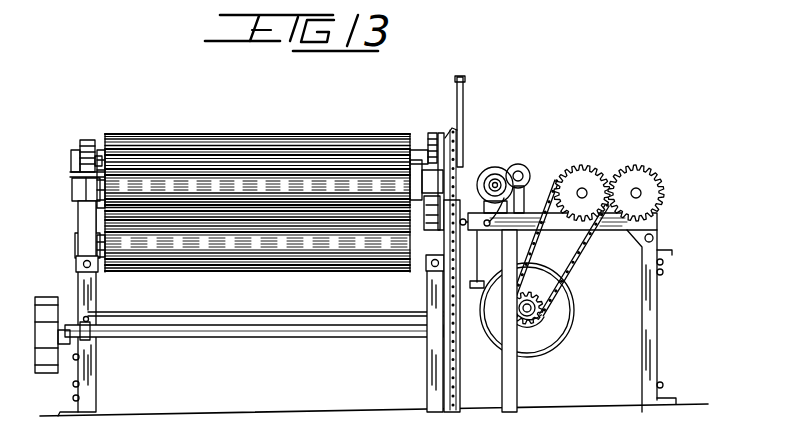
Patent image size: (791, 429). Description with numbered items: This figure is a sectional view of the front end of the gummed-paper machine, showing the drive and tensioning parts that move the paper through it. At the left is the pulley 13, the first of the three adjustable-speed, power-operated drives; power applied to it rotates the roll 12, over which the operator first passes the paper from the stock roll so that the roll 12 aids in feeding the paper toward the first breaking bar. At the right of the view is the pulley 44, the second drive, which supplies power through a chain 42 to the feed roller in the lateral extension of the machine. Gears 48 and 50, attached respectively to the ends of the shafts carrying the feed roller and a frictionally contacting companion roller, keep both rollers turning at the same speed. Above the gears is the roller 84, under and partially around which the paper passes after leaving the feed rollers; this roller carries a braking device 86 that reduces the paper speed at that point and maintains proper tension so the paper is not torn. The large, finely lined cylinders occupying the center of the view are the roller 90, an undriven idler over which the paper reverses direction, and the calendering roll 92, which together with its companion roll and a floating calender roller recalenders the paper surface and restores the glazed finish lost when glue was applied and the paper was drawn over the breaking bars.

The roll 12 is at (283, 256).
The pulley 13 is at (42, 304).
The chain 42 is at (562, 262).
The pulley 44 is at (553, 334).
The gear 48 is at (586, 183).
The gear 50 is at (647, 200).
The roller 84 is at (523, 165).
The braking device 86 is at (496, 166).
The roller 90 is at (107, 190).
The calendering roll 92 is at (284, 143).